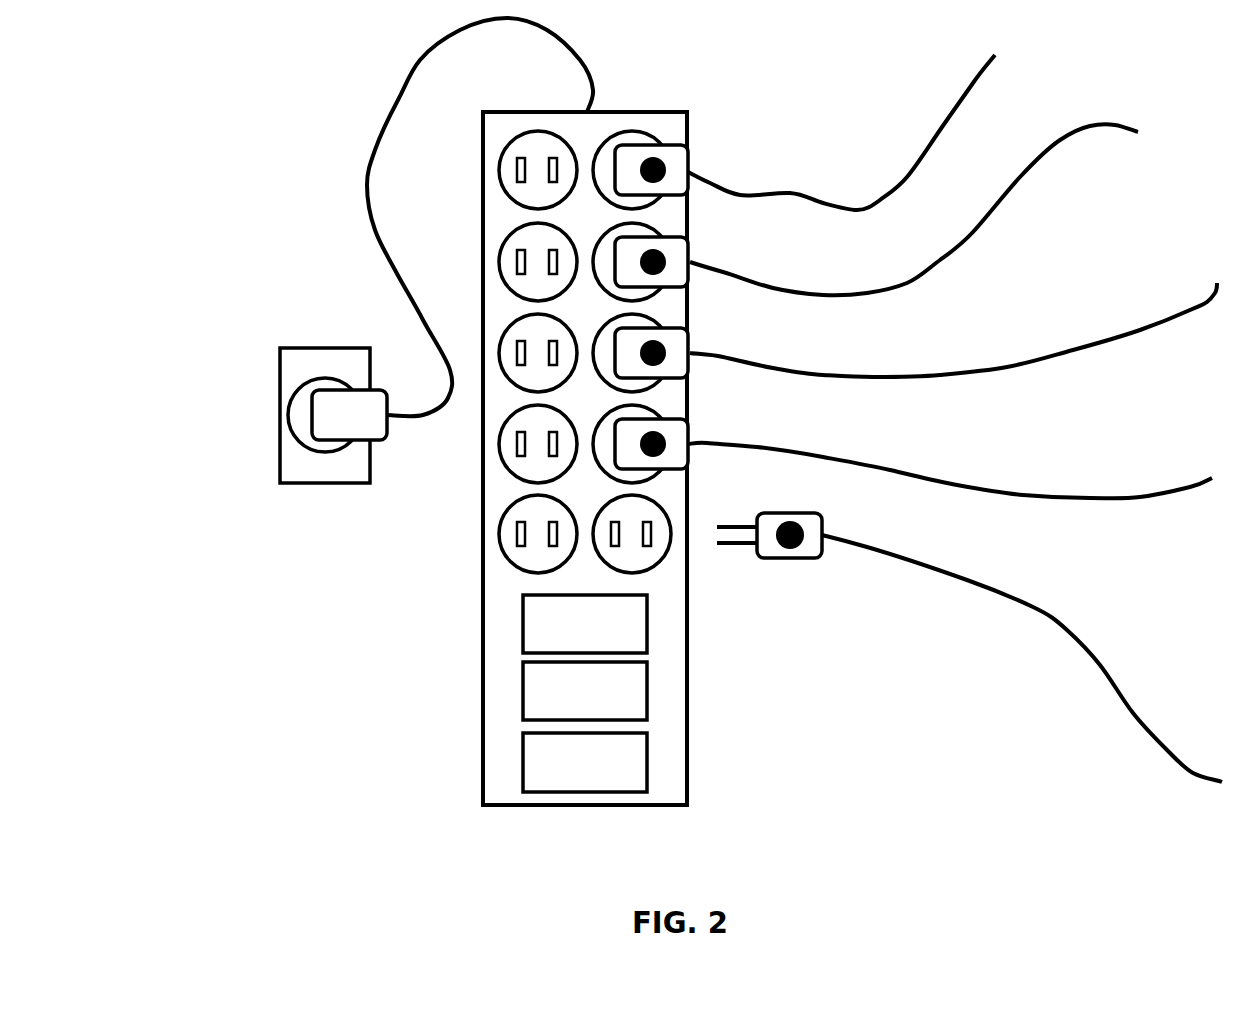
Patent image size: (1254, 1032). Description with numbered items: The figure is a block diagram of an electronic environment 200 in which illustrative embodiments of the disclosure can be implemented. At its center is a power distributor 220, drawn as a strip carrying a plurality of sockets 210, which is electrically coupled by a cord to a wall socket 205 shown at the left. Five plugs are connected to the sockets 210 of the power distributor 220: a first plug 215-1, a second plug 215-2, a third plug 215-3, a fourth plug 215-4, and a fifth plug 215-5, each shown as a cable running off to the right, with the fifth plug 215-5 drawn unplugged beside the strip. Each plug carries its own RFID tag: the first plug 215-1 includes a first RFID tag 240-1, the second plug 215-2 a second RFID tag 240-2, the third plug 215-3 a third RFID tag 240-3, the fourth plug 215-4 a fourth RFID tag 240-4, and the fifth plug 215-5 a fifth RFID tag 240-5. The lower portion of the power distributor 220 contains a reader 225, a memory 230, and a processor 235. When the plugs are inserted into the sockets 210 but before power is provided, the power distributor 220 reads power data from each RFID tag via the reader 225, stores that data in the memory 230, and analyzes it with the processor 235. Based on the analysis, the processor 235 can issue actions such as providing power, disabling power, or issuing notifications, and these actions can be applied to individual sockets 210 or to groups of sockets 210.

The electronic environment 200 is at (235, 78).
The wall socket 205 is at (290, 355).
The sockets 210 is at (510, 535).
The first plug 215-1 is at (760, 190).
The second plug 215-2 is at (900, 283).
The third plug 215-3 is at (893, 370).
The fourth plug 215-4 is at (820, 445).
The fifth plug 215-5 is at (907, 553).
The power distributor 220 is at (488, 693).
The reader 225 is at (602, 646).
The memory 230 is at (602, 713).
The processor 235 is at (585, 762).
The first RFID tag 240-1 is at (647, 155).
The second RFID tag 240-2 is at (655, 248).
The third RFID tag 240-3 is at (655, 338).
The fourth RFID tag 240-4 is at (655, 428).
The fifth RFID tag 240-5 is at (782, 553).